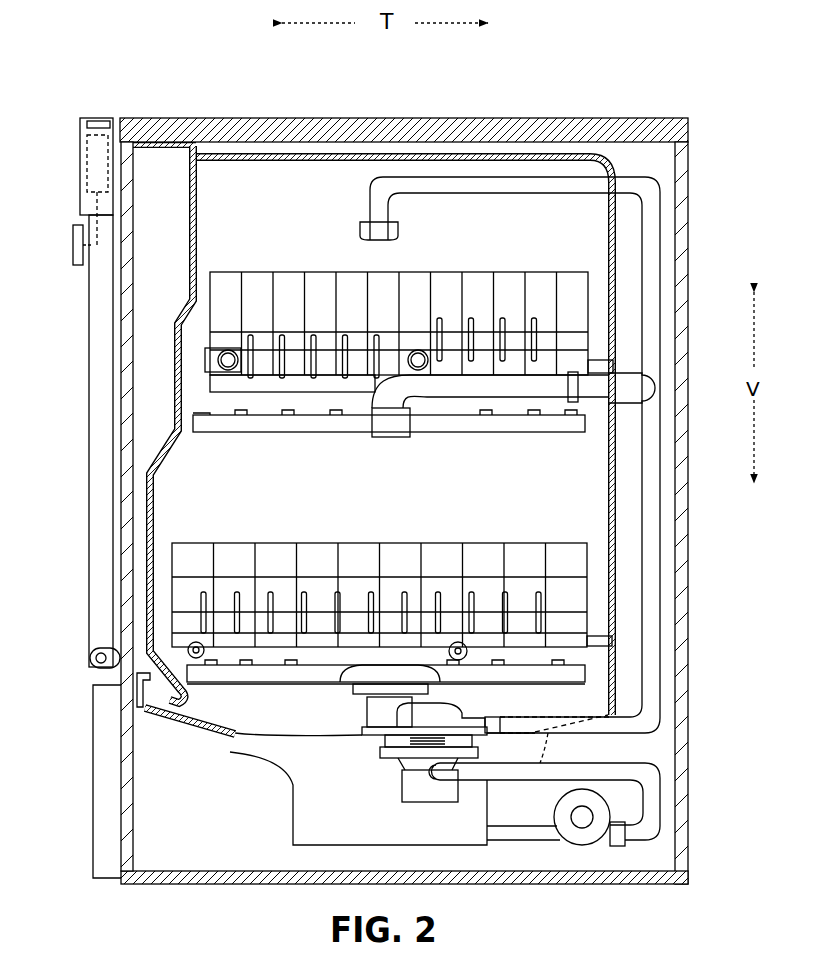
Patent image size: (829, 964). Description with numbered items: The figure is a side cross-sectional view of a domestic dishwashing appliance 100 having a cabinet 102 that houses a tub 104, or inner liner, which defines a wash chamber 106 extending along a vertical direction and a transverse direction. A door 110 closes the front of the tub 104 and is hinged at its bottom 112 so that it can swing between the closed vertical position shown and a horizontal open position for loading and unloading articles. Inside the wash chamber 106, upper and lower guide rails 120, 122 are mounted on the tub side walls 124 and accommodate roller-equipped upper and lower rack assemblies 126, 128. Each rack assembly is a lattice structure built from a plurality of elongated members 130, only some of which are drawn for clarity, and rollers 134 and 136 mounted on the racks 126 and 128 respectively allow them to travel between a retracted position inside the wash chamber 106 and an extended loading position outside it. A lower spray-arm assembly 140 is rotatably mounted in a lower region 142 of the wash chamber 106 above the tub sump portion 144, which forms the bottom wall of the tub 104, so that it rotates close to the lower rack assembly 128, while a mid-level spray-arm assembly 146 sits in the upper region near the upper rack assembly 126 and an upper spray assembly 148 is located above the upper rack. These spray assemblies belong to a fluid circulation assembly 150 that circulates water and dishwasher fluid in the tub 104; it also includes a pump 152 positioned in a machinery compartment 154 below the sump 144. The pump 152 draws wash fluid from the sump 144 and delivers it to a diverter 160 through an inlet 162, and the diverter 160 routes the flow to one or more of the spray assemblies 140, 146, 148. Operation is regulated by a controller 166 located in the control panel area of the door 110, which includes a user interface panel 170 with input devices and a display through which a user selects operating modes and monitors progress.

The dishwashing appliance 100 is at (562, 68).
The cabinet 102 is at (689, 165).
The tub 104 is at (300, 498).
The wash chamber 106 is at (180, 479).
The door 110 is at (90, 550).
The bottom of door 112 is at (90, 670).
The upper guide rail 120 is at (205, 363).
The lower guide rail 122 is at (160, 690).
The tub side wall 124 is at (275, 176).
The upper rack assembly 126 is at (263, 247).
The lower rack assembly 128 is at (457, 541).
The elongated member 130 is at (320, 542).
The roller 134 is at (215, 368).
The roller 136 is at (450, 647).
The lower spray-arm assembly 140 is at (248, 670).
The lower region of wash chamber 142 is at (593, 655).
The tub sump portion 144 is at (177, 728).
The mid-level spray-arm assembly 146 is at (425, 433).
The upper spray assembly 148 is at (398, 232).
The fluid circulation assembly 150 is at (663, 478).
The pump 152 is at (590, 840).
The machinery compartment 154 is at (200, 858).
The diverter 160 is at (410, 774).
The inlet 162 is at (430, 782).
The controller 166 is at (82, 160).
The user interface panel 170 is at (74, 247).